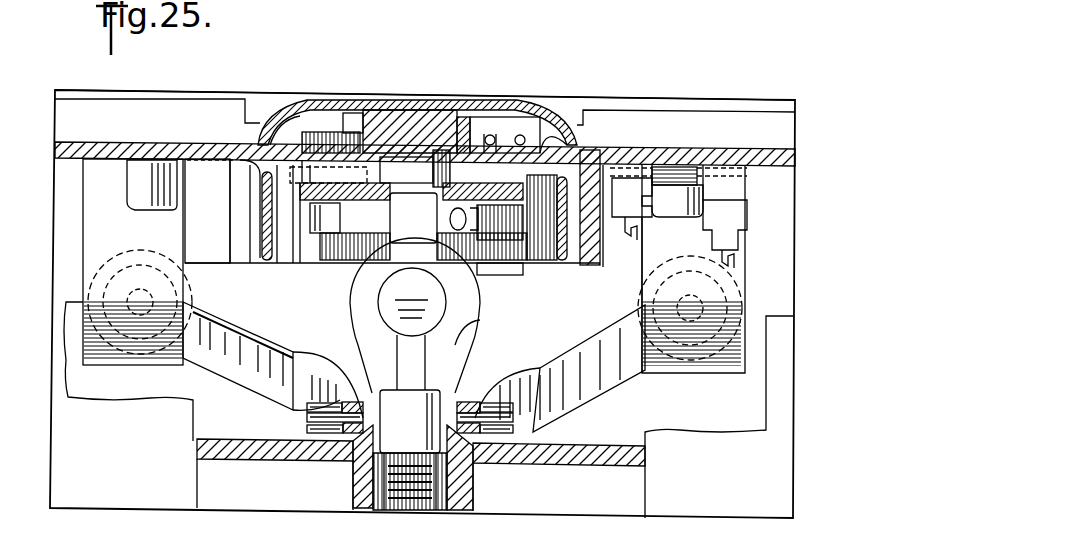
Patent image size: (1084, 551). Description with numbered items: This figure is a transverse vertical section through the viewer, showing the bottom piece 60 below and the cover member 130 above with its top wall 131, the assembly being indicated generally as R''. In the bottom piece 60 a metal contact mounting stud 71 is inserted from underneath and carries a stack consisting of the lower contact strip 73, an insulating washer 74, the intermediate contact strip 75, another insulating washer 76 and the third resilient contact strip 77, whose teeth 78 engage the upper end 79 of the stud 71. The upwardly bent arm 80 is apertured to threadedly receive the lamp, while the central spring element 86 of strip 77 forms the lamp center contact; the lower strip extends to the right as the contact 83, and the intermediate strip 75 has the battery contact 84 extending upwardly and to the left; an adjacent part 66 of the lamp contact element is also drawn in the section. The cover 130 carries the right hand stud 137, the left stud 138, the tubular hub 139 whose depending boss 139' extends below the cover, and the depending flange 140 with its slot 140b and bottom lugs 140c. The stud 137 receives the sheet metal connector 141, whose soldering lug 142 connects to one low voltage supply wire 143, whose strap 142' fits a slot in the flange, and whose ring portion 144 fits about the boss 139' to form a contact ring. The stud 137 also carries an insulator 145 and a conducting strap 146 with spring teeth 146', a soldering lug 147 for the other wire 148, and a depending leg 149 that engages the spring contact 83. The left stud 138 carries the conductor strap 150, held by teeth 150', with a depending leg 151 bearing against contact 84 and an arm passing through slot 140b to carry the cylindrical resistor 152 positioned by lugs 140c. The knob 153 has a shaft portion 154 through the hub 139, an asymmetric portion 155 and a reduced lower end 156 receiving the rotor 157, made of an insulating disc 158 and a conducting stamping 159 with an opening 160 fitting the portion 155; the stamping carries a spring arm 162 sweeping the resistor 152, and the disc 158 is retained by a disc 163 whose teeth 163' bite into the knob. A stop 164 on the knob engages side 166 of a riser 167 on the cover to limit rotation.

The bottom piece 60 is at (229, 88).
The top or cover member 130 is at (148, 115).
The top wall 131 is at (80, 128).
The apparatus R'' is at (64, 68).
The knob 153 is at (400, 108).
The shaft portion 154 is at (460, 116).
The stop 164 is at (345, 112).
The side of riser 166 is at (272, 132).
The riser 167 is at (320, 128).
The tubular element or hub 139 is at (505, 111).
The depending boss 139' is at (504, 134).
The ring portion 144 is at (539, 142).
The left stud 138 is at (135, 198).
The teeth 150' is at (134, 185).
The conductor strap 150 is at (210, 211).
The depending leg 151 is at (242, 218).
The slot 140b is at (244, 230).
The cylindrical resistor 152 is at (270, 262).
The spring arm 162 is at (298, 226).
The depending flange 140 is at (590, 266).
The asymmetric portion 155 is at (406, 170).
The opening 160 is at (433, 168).
The disc 163 is at (413, 221).
The teeth 163' is at (355, 246).
The conducting stamping 159 is at (334, 217).
The reduced lower end 156 is at (413, 218).
The insulating disc 158 is at (486, 222).
The rotor 157 is at (532, 217).
The bottom lugs 140c is at (512, 278).
The insulator 145 is at (678, 160).
The strap 142' is at (601, 193).
The soldering lug 142 is at (626, 214).
The low voltage supply wire 143 is at (634, 238).
The spring teeth 146' is at (677, 201).
The right hand stud 137 is at (676, 218).
The sheet metal connector 141 is at (680, 166).
The soldering lug 147 is at (744, 204).
The wire 148 is at (732, 252).
The depending leg 149 is at (734, 266).
The conducting strap 146 is at (711, 247).
The battery contact 84 is at (220, 318).
The teeth 78 is at (362, 360).
The upwardly bent arm 80 is at (455, 344).
The spring element 86 is at (412, 302).
The link 66 is at (478, 320).
The upper end 79 is at (408, 386).
The third contact resilient strip 77 is at (342, 402).
The insulating washer 76 is at (307, 409).
The intermediate contact strip 75 is at (307, 428).
The battery contact 83 is at (568, 364).
The insulating washer 74 is at (355, 448).
The lower contact strip 73 is at (528, 462).
The metal contact mounting stud 71 is at (384, 510).